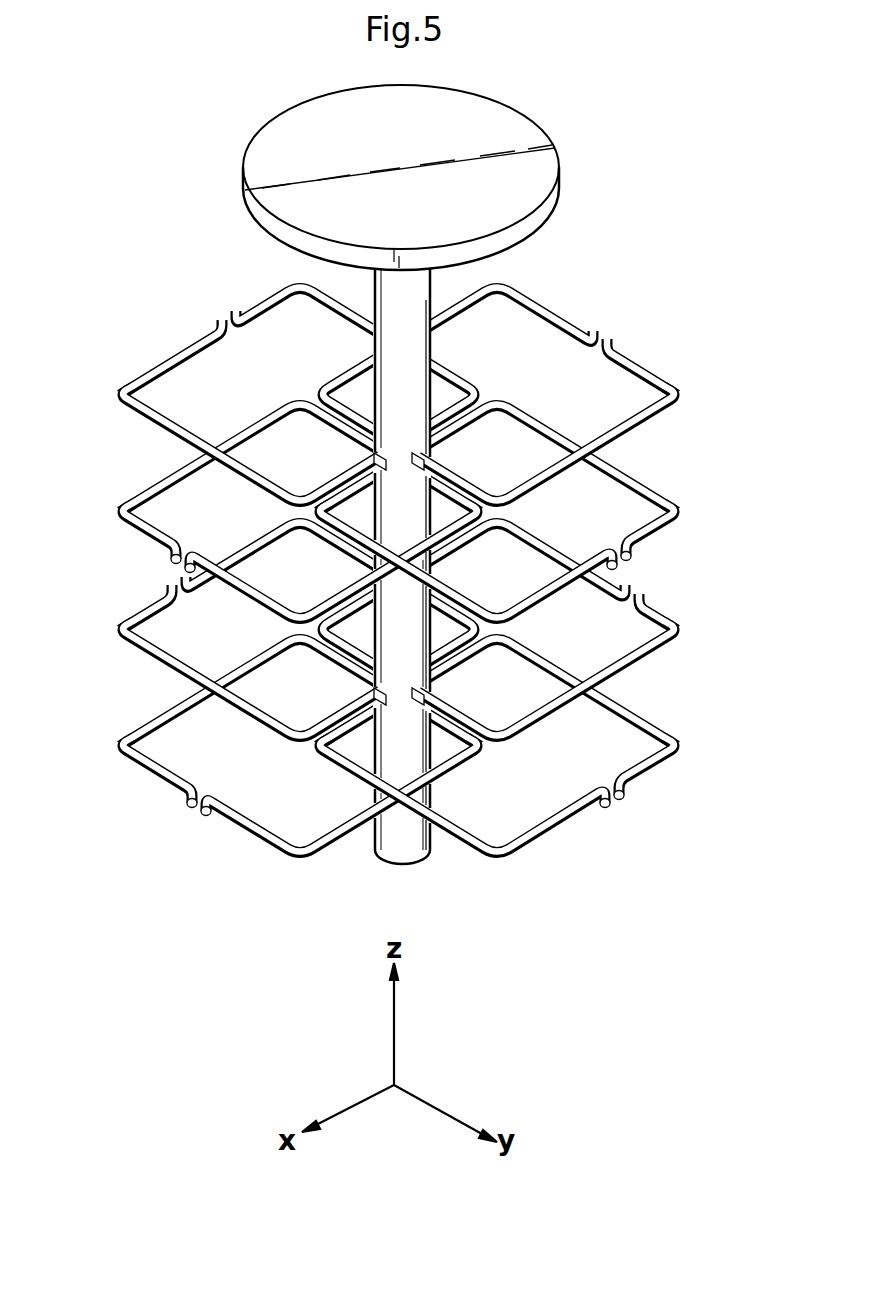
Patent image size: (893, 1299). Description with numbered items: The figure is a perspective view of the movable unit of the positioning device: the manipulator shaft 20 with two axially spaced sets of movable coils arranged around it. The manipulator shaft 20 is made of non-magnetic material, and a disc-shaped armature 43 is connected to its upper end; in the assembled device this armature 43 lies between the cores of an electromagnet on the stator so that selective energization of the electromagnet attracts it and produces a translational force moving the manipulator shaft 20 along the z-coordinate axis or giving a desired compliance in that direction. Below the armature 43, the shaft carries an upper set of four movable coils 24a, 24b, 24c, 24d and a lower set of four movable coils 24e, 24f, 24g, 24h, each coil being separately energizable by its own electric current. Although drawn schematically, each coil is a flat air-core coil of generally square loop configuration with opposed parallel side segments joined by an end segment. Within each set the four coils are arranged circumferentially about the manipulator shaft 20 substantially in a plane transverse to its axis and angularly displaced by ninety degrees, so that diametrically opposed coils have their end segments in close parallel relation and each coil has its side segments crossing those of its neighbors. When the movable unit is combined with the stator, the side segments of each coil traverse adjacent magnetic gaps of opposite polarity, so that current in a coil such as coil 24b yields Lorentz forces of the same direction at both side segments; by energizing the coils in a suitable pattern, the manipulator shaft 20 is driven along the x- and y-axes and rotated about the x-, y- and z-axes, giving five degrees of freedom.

The manipulator shaft 20 is at (393, 330).
The disc-shaped armature 43 is at (533, 193).
The movable coil 24a is at (124, 510).
The movable coil 24b is at (672, 507).
The movable coil 24c is at (655, 373).
The movable coil 24d is at (177, 350).
The movable coil 24e is at (252, 828).
The movable coil 24f is at (670, 733).
The movable coil 24g is at (672, 620).
The movable coil 24h is at (125, 633).